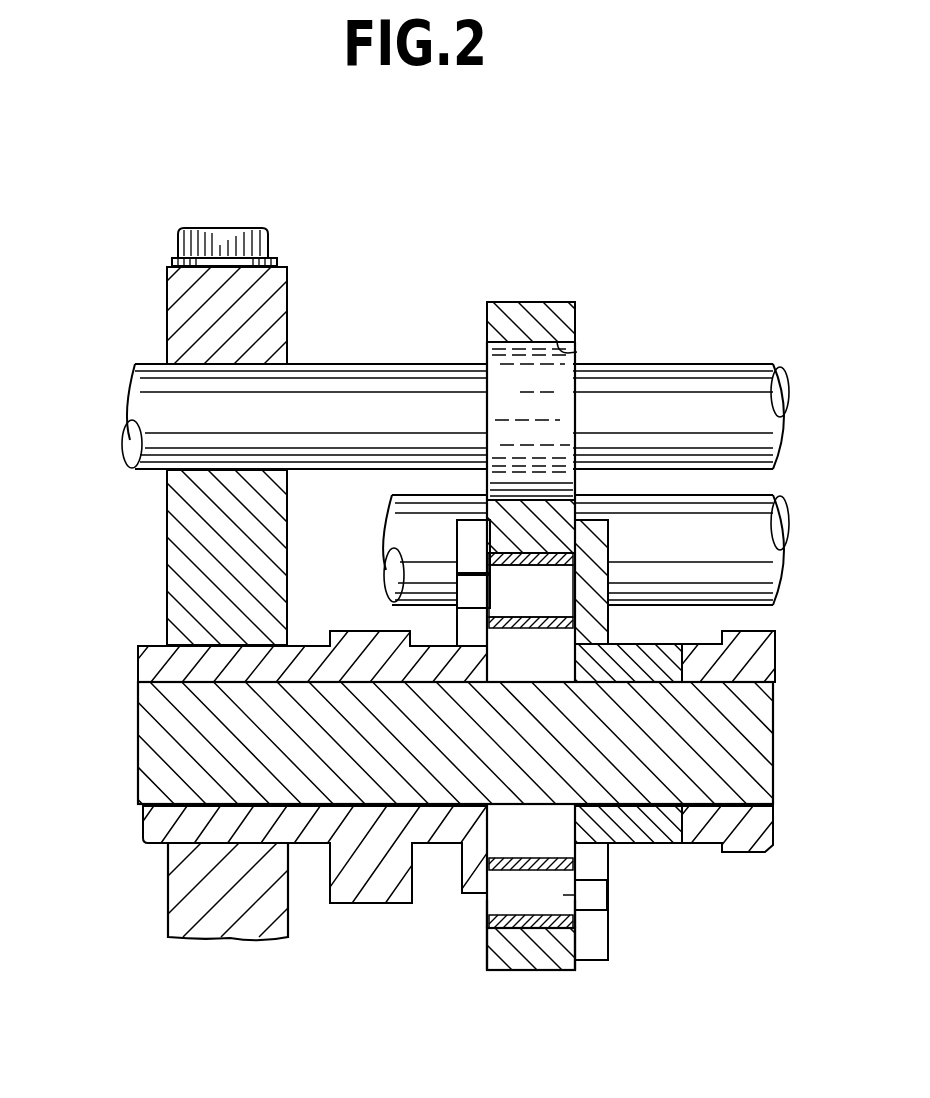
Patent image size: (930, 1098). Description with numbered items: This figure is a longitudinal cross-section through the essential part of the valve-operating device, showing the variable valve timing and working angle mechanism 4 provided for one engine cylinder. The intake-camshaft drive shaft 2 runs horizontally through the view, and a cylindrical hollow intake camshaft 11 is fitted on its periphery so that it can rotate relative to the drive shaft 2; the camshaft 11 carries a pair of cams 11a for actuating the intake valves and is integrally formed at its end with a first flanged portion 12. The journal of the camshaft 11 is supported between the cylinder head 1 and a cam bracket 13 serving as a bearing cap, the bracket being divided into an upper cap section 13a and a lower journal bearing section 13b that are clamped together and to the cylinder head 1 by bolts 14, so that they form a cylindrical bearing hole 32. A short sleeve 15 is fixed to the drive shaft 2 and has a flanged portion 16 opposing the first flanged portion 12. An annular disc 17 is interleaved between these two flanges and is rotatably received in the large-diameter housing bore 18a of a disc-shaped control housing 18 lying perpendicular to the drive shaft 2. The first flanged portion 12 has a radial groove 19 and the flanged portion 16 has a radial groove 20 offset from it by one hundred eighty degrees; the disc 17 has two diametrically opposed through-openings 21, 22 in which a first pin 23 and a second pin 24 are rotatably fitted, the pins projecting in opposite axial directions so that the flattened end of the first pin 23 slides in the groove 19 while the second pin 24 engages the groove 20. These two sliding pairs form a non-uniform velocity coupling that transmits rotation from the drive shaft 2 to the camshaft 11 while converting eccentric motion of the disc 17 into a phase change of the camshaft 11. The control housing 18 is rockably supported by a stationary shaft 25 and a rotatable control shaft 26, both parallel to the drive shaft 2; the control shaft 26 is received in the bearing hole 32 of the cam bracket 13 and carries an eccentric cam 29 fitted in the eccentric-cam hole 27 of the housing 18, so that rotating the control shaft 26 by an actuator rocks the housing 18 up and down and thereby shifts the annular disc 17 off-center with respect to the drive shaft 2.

The cylinder head 1 is at (178, 912).
The intake-camshaft drive shaft 2 is at (760, 742).
The variable valve timing and working angle mechanism 4 is at (561, 962).
The intake camshaft 11 is at (465, 812).
The cams 11a is at (350, 898).
The first flanged portion 12 is at (462, 877).
The cam bracket 13 is at (150, 456).
The upper cap section 13a is at (170, 326).
The lower journal bearing section 13b is at (181, 557).
The bolts 14 is at (232, 228).
The sleeve 15 is at (647, 845).
The flanged portion 16 is at (607, 537).
The annular disc 17 is at (510, 927).
The control housing 18 is at (677, 597).
The housing bore 18a is at (547, 925).
The radial groove 19 is at (463, 540).
The radial groove 20 is at (608, 945).
The through-opening 21 is at (548, 567).
The through-opening 22 is at (507, 915).
The first pin 23 is at (557, 608).
The second pin 24 is at (565, 895).
The stationary shaft 25 is at (747, 503).
The control shaft 26 is at (745, 367).
The eccentric-cam hole 27 is at (577, 352).
The eccentric cam 29 is at (565, 405).
The bearing hole 32 is at (268, 368).